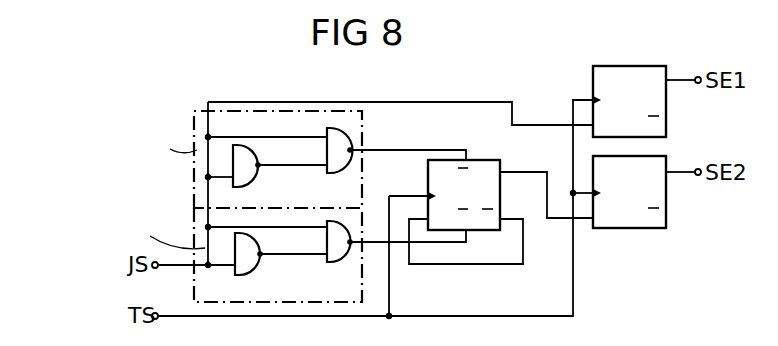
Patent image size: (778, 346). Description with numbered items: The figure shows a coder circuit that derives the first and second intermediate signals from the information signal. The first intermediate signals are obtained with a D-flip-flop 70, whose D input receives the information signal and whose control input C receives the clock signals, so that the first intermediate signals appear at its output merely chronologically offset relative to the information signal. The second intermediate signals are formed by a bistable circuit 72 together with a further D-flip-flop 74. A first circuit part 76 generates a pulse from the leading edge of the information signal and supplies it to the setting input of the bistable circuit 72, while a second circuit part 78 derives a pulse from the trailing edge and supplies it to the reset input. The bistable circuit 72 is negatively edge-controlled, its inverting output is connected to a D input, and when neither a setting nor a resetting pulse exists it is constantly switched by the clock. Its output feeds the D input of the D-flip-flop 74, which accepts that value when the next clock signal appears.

The D-flip-flop 70 is at (629, 87).
The bistable circuit 72 is at (470, 181).
The further D-flip-flop 74 is at (629, 208).
The first circuit part 76 is at (194, 124).
The second circuit part 78 is at (195, 230).